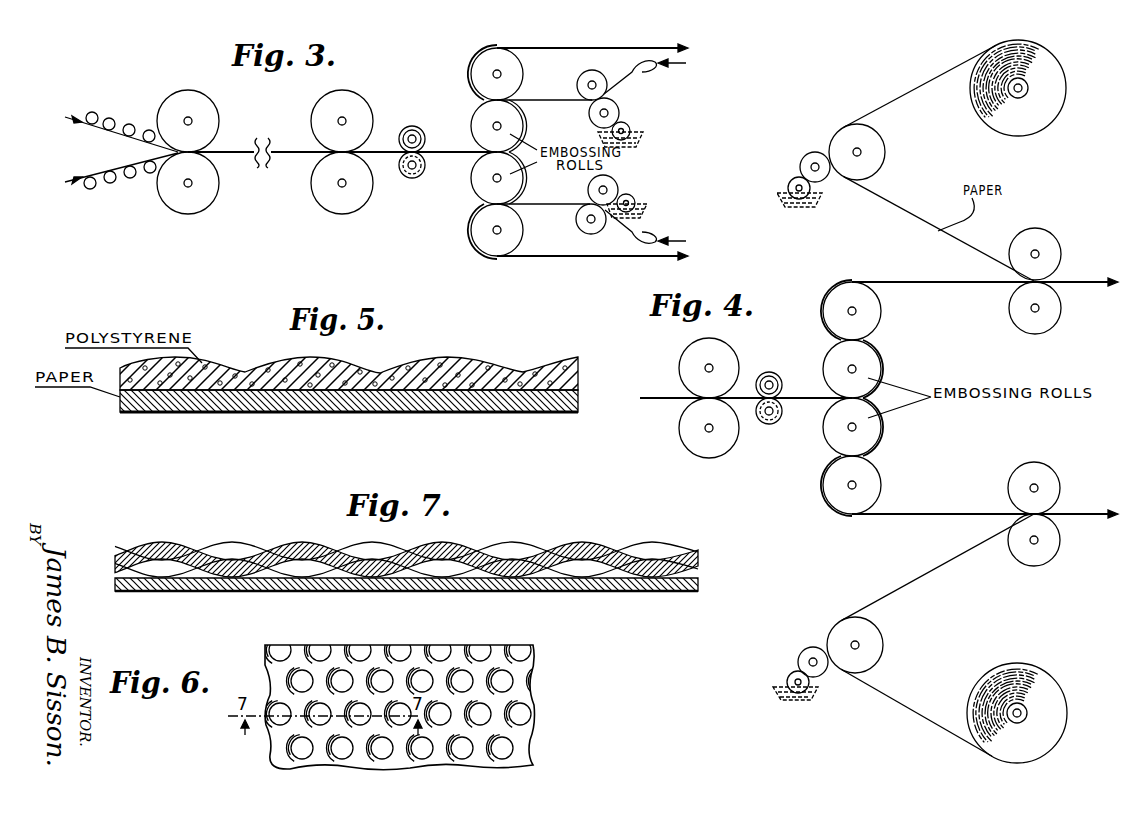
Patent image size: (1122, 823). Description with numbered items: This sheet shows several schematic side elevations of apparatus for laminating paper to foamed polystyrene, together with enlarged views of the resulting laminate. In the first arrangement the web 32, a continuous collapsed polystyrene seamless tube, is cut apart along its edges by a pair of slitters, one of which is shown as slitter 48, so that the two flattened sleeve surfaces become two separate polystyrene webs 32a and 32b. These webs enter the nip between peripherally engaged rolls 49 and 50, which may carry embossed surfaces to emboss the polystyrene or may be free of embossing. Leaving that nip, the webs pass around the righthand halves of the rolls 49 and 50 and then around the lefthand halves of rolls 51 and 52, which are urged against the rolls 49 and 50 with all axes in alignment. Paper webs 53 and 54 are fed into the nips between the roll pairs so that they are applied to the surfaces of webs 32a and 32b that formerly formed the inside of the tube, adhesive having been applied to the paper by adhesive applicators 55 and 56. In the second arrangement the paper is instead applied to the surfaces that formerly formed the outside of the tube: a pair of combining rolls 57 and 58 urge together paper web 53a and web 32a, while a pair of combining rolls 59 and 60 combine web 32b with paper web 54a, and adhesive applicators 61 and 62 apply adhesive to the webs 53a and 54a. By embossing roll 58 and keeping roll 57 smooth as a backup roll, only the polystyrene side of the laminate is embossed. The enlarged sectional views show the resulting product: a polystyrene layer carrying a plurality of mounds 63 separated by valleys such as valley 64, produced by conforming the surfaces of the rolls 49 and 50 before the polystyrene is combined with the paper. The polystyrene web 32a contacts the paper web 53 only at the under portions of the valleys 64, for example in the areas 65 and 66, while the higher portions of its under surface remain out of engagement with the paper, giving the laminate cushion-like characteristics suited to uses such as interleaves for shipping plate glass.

In FIG. 3, the web 32 is at (384, 155).
In FIG. 4, the web 32 is at (798, 400).
In FIG. 3, the polystyrene web 32a is at (446, 151).
In FIG. 4, the polystyrene web 32a is at (942, 284).
In FIG. 7, the polystyrene web 32a is at (700, 556).
In FIG. 3, the polystyrene web 32b is at (452, 155).
In FIG. 4, the polystyrene web 32b is at (943, 514).
In FIG. 3, the slitter 48 is at (414, 126).
In FIG. 3, the roll 49 is at (480, 108).
In FIG. 3, the roll 50 is at (486, 187).
In FIG. 3, the roll 51 is at (514, 66).
In FIG. 3, the roll 52 is at (515, 238).
In FIG. 3, the paper web 53 is at (538, 100).
In FIG. 7, the paper web 53 is at (700, 585).
In FIG. 4, the paper web 53a is at (873, 192).
In FIG. 3, the paper web 54 is at (535, 205).
In FIG. 4, the paper web 54a is at (930, 572).
In FIG. 3, the adhesive applicator 55 is at (622, 122).
In FIG. 3, the adhesive applicator 56 is at (623, 198).
In FIG. 4, the combining roll 57 is at (1062, 254).
In FIG. 4, the combining roll 58 is at (1062, 308).
In FIG. 4, the combining roll 59 is at (1060, 490).
In FIG. 4, the combining roll 60 is at (1060, 541).
In FIG. 4, the adhesive applicator 61 is at (782, 193).
In FIG. 4, the adhesive applicator 62 is at (782, 688).
In FIG. 7, the mound 63 is at (162, 542).
In FIG. 7, the valley 64 is at (232, 578).
In FIG. 7, the area 65 is at (508, 578).
In FIG. 7, the area 66 is at (653, 578).